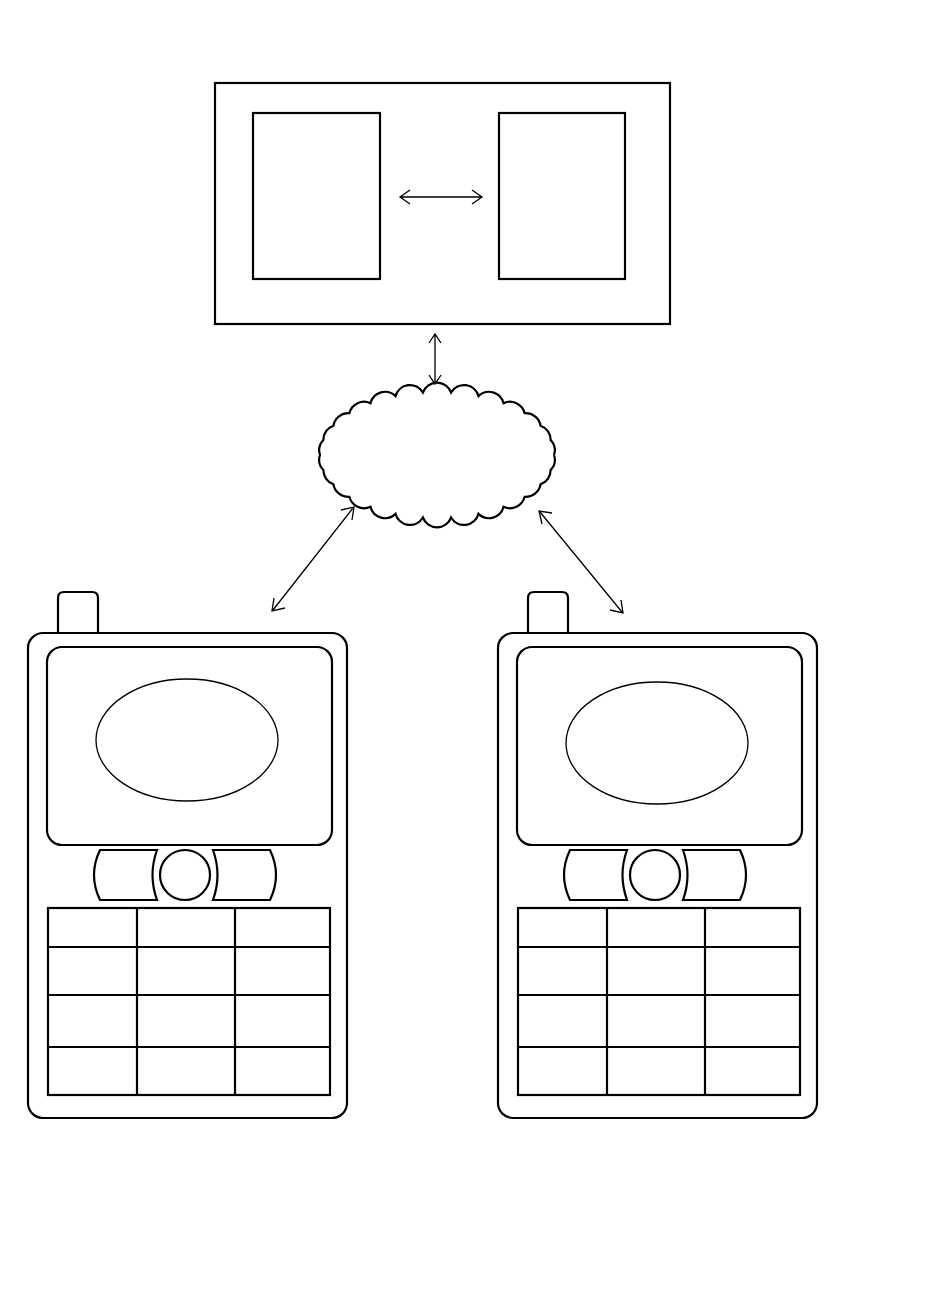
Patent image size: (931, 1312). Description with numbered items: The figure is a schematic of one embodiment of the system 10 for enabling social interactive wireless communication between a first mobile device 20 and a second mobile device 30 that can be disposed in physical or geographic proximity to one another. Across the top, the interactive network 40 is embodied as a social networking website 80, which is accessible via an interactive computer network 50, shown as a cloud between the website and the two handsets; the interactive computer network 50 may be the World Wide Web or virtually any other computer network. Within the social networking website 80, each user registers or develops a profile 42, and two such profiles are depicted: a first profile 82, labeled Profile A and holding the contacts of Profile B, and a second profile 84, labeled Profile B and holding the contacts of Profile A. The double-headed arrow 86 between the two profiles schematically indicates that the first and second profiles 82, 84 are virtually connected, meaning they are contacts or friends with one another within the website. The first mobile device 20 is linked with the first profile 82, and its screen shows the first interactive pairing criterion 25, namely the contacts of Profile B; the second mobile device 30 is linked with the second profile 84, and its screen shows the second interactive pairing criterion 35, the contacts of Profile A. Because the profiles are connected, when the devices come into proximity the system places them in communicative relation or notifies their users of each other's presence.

The system for enabling social interactive wireless communication 10 is at (826, 39).
The first mobile device 20 is at (215, 878).
The first interactive pairing criterion 25 is at (288, 746).
The second mobile device 30 is at (686, 878).
The second interactive pairing criterion 35 is at (760, 749).
The interactive network 40 is at (458, 203).
The profile 42 is at (442, 196).
The interactive computer network 50 is at (437, 455).
The social networking website 80 is at (686, 128).
The first profile 82 is at (253, 245).
The second profile 84 is at (625, 245).
The virtual connection 86 is at (451, 196).